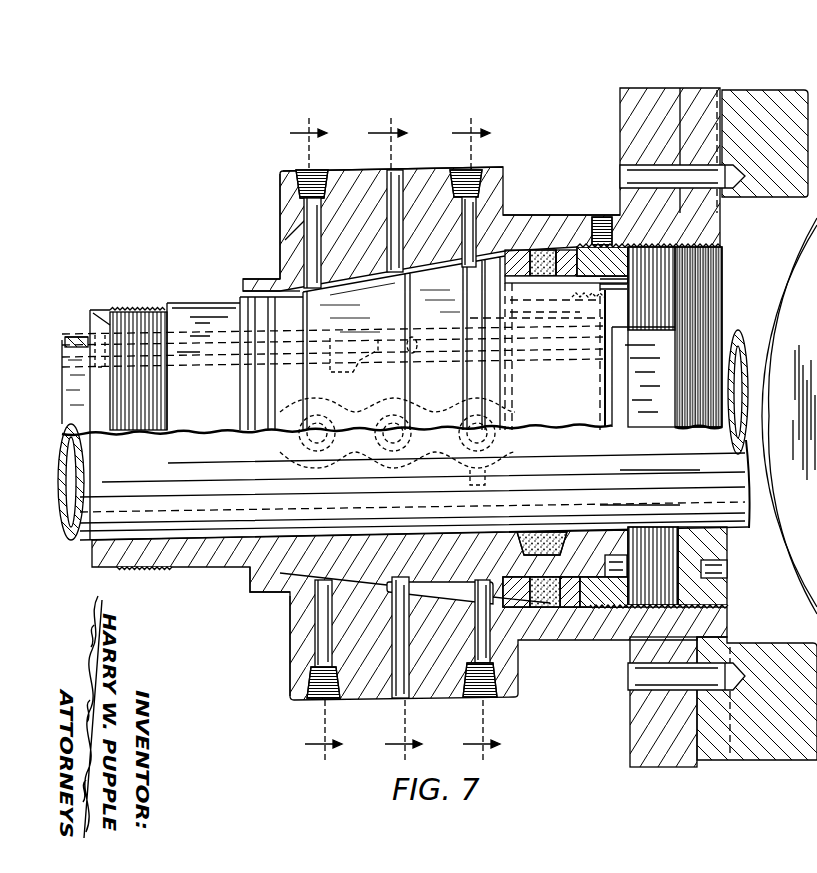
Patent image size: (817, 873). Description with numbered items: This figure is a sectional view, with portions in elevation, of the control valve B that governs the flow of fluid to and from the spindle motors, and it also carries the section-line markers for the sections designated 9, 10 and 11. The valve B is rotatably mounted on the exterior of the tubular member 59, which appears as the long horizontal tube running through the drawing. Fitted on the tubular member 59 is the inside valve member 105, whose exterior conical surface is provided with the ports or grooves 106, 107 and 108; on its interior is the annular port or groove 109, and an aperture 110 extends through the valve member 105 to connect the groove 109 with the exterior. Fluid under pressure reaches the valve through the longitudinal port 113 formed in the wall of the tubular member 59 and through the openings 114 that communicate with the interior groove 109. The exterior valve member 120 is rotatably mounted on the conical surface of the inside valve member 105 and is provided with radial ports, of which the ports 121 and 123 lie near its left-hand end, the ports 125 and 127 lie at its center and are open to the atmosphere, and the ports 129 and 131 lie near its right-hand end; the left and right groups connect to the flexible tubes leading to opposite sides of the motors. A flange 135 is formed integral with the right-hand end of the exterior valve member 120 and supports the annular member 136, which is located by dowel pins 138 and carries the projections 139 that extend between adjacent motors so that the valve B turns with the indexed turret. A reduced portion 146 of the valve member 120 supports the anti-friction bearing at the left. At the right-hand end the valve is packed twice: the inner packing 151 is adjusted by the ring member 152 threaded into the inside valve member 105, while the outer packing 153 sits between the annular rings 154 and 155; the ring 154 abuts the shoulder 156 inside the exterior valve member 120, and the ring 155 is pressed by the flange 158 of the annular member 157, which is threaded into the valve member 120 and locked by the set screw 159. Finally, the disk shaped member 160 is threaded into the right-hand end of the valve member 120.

The valve B is at (281, 180).
The tubular member 59 is at (730, 522).
The inside valve member 105 is at (200, 308).
The port or groove 106 is at (300, 285).
The port or groove 107 is at (517, 176).
The port or groove 108 is at (408, 615).
The annular port or groove 109 is at (418, 345).
The aperture 110 is at (282, 602).
The longitudinal port or aperture 113 is at (70, 336).
The openings 114 is at (340, 372).
The exterior valve member 120 is at (290, 210).
The radial port or opening 121 is at (305, 245).
The radial port or opening 123 is at (292, 648).
The radial port or opening 125 is at (392, 175).
The radial port or opening 127 is at (403, 692).
The radial port or opening 129 is at (518, 158).
The radial port or opening 131 is at (480, 650).
The flange 135 is at (636, 93).
The annular member 136 is at (714, 92).
The dowel pins 138 is at (632, 178).
The projection 139 is at (800, 84).
The reduced portion 146 is at (250, 284).
The inner packing 151 is at (520, 530).
The ring member 152 is at (604, 398).
The outer packing 153 is at (546, 206).
The annular ring 154 is at (540, 283).
The annular ring 155 is at (592, 300).
The shoulder 156 is at (516, 196).
The annular member 157 is at (628, 672).
The flange 158 is at (590, 640).
The set screw 159 is at (601, 228).
The disk shaped member 160 is at (690, 270).
The section line 9- 9 is at (325, 439).
The section line 10- 10 is at (410, 439).
The section line 11- 11 is at (492, 439).